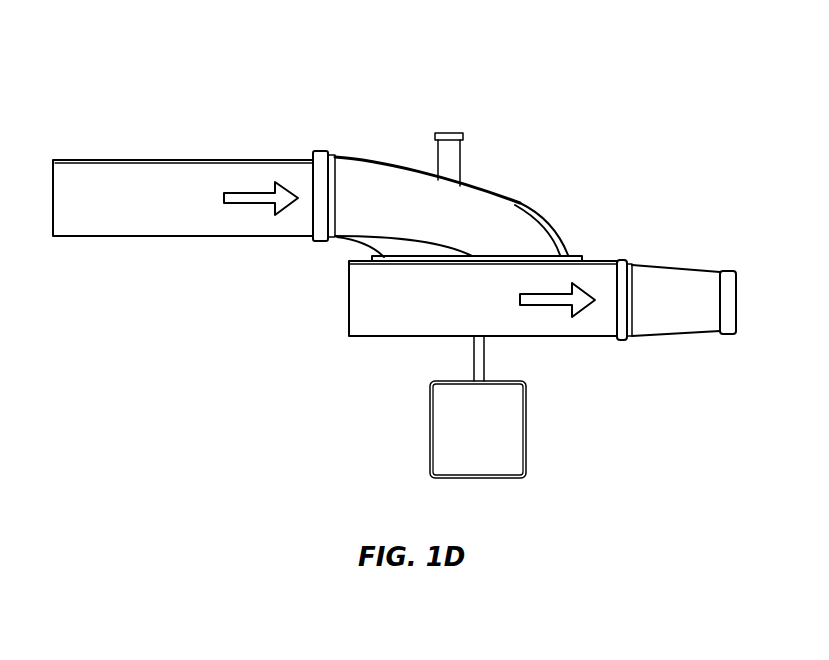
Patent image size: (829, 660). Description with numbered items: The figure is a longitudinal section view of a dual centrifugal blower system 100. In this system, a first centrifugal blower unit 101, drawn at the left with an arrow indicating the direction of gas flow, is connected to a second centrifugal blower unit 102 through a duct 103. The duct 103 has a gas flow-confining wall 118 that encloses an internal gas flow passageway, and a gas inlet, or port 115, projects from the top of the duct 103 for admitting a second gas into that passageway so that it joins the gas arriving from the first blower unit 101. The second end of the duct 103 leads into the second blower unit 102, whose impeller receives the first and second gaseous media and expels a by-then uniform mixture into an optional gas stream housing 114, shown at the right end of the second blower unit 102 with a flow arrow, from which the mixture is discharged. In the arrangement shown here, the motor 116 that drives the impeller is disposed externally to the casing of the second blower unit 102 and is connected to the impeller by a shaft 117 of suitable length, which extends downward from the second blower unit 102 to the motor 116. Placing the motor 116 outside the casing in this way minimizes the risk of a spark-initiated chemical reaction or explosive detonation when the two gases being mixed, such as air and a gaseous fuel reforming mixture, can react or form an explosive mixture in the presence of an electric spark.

The dual centrifugal blower system 100 is at (612, 87).
The first centrifugal blower unit 101 is at (183, 198).
The second centrifugal blower unit 102 is at (395, 302).
The duct 103 is at (472, 220).
The gas stream housing 114 is at (662, 307).
The gas inlet or port 115 is at (460, 162).
The motor 116 is at (513, 428).
The shaft 117 is at (485, 372).
The gas flow-confining wall 118 is at (352, 186).